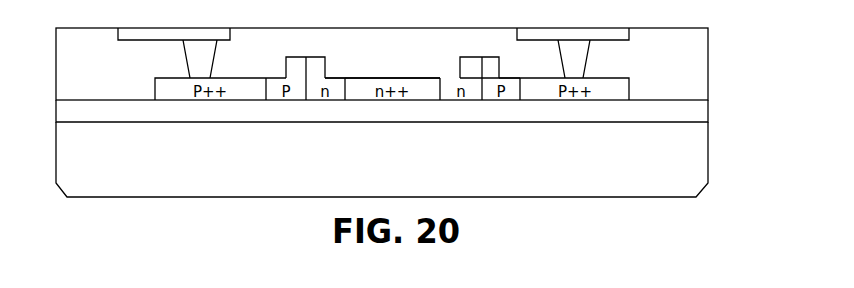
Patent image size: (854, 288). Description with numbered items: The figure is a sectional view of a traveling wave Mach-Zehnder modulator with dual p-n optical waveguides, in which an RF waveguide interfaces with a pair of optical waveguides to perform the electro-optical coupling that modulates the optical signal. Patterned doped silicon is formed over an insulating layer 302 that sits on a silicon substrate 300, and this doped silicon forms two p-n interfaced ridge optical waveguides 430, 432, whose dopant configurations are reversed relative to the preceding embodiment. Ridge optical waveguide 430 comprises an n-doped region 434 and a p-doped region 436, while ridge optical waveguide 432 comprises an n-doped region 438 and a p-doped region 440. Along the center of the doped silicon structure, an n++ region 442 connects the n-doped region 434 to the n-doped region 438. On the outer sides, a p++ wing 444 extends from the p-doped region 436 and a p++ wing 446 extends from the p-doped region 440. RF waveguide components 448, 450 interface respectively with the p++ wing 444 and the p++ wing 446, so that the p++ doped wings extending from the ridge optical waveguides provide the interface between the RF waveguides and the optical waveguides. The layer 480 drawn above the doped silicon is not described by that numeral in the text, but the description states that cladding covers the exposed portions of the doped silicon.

The silicon substrate 300 is at (700, 166).
The insulating layer 302 is at (700, 113).
The dielectric layer 480 is at (700, 70).
The RF waveguide component 448 is at (118, 36).
The p++ wing 444 is at (178, 78).
The p-doped region 436 is at (286, 70).
The n-doped region 434 is at (325, 72).
The ridge optical waveguide 430 is at (302, 38).
The n++ region 442 is at (418, 78).
The n-doped region 438 is at (460, 70).
The p-doped region 440 is at (499, 73).
The ridge optical waveguide 432 is at (478, 38).
The p++ wing 446 is at (590, 78).
The RF waveguide component 450 is at (629, 36).